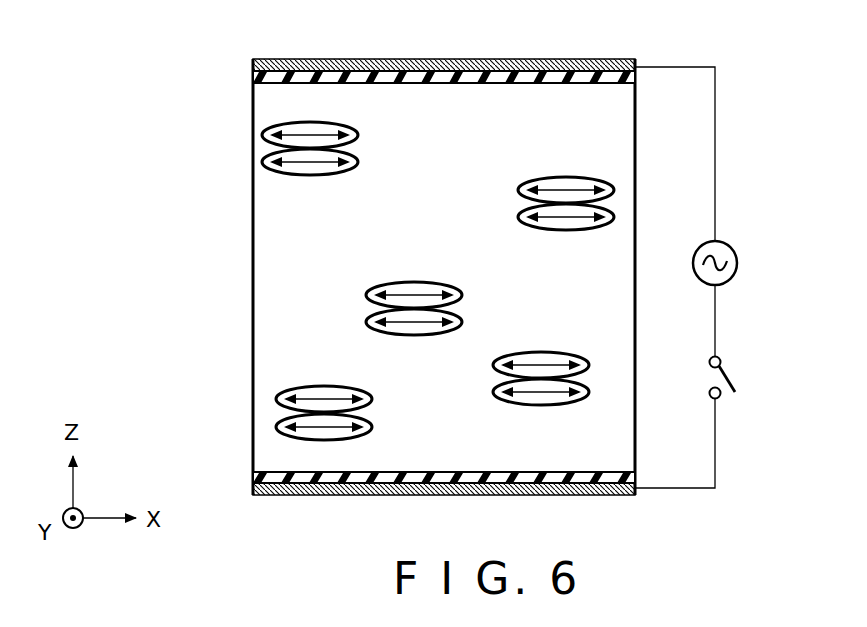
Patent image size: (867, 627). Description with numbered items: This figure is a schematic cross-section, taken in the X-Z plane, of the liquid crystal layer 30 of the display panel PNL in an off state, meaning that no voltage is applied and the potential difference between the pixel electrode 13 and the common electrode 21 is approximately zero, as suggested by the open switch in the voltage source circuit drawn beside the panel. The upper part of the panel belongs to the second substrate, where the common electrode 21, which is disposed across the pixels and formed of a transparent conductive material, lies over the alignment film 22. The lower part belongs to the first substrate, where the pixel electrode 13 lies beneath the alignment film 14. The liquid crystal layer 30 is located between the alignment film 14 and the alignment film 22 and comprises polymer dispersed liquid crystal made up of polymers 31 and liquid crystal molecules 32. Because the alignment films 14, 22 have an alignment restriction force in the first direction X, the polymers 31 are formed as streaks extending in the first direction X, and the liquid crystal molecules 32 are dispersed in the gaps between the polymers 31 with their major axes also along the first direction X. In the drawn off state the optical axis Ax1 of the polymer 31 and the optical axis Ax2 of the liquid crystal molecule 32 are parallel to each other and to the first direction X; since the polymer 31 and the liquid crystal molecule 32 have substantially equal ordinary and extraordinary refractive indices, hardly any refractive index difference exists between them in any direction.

The display panel PNL is at (465, 257).
The common electrode 21 is at (253, 64).
The alignment film 22 is at (253, 77).
The pixel electrode 13 is at (253, 489).
The alignment film 14 is at (253, 477).
The liquid crystal layer 30 is at (401, 277).
The polymer 31 is at (308, 206).
The liquid crystal molecule 32 is at (269, 123).
The optical axis of the polymer Ax1 is at (305, 163).
The optical axis of the liquid crystal molecule Ax2 is at (300, 135).